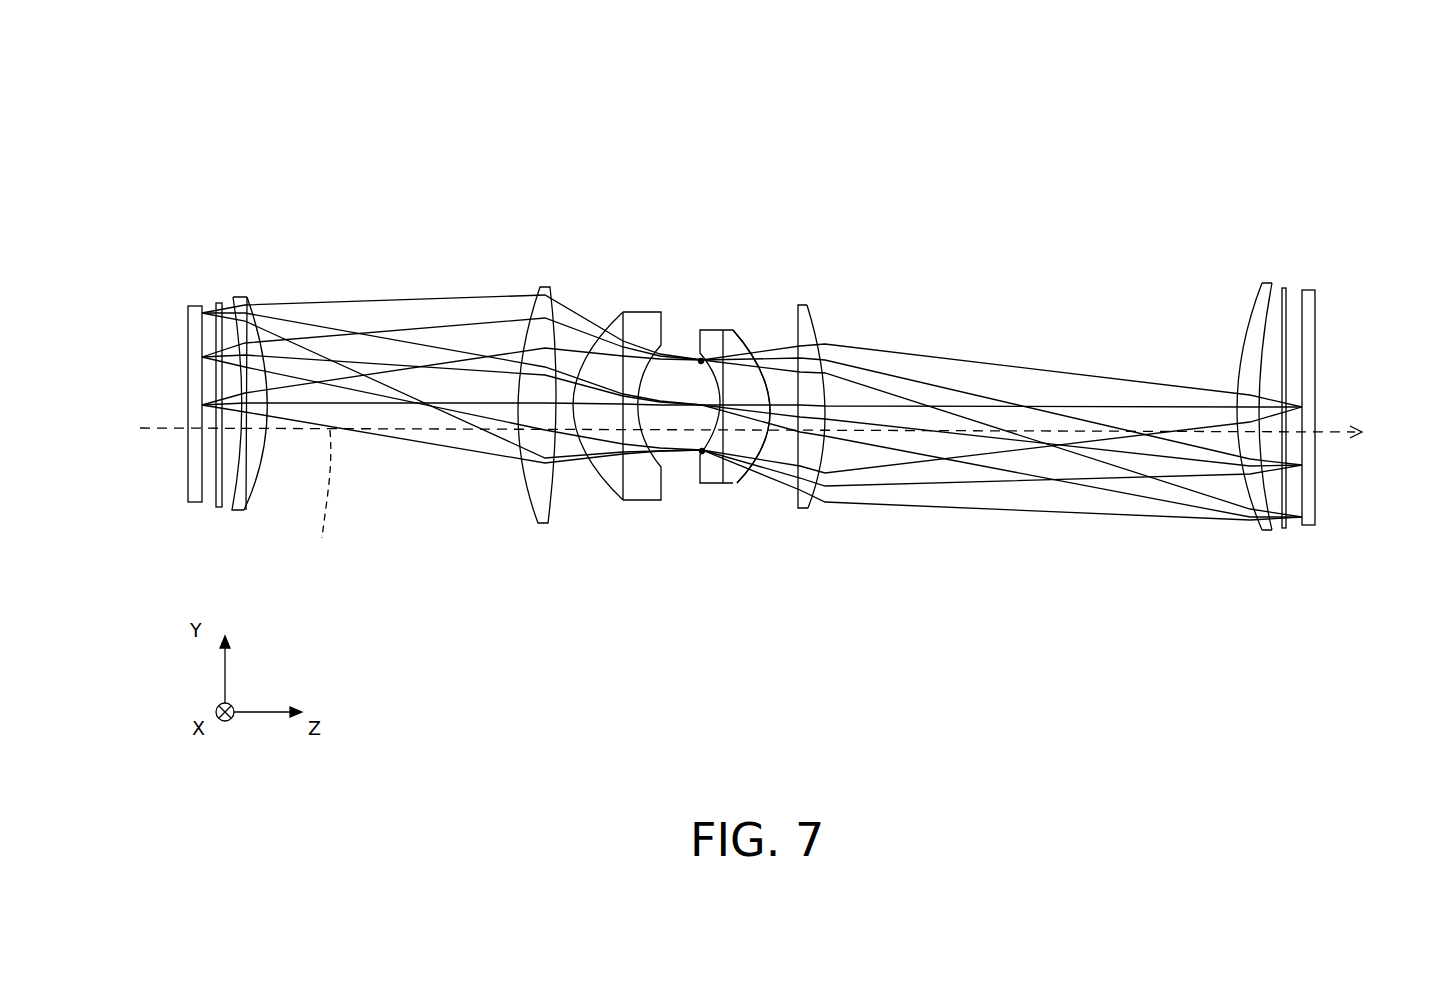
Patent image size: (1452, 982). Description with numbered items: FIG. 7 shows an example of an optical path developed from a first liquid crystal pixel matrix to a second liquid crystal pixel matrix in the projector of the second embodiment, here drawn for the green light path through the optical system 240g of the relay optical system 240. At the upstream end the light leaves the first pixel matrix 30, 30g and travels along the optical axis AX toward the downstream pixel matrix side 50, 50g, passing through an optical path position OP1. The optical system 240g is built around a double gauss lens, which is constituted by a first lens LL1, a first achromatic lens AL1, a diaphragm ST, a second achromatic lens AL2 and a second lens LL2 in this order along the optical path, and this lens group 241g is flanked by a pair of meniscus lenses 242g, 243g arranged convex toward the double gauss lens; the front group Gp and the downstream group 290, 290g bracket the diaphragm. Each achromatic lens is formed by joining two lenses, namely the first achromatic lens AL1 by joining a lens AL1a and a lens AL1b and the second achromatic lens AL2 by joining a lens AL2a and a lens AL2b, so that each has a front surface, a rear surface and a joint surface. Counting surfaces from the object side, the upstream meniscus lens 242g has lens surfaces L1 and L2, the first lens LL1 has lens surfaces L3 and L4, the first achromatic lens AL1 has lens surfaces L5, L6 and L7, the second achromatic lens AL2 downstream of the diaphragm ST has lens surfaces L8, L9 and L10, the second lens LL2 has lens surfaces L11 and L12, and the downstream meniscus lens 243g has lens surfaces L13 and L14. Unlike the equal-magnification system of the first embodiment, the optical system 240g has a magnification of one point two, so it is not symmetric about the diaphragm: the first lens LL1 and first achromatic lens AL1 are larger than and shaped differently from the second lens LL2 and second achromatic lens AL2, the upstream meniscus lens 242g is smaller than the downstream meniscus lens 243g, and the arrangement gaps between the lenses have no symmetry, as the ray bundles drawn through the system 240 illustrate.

The light valve / liquid crystal panel 30 is at (180, 250).
The light valve (green) 30g is at (170, 332).
The relay optical system 240 is at (650, 133).
The optical system 240g is at (773, 314).
The second lens group 241g is at (737, 215).
The meniscus lens 242g is at (390, 364).
The meniscus lens 243g is at (1257, 347).
The lens holding mechanism 290 is at (810, 132).
The lens holding mechanism (green) 290g is at (846, 287).
The cross dichroic prism / screen side element 50 is at (1327, 255).
The prism (green) 50g is at (1375, 324).
The lens surface L1 is at (233, 297).
The lens surface L2 is at (231, 317).
The lens surface L3 is at (516, 293).
The lens surface L4 is at (580, 312).
The lens surface L5 is at (613, 313).
The lens surface L6 is at (639, 318).
The lens surface L7 is at (663, 342).
The lens surface L8 is at (700, 336).
The lens surface L9 is at (722, 331).
The lens surface L10 is at (745, 332).
The lens surface L11 is at (796, 352).
The lens surface L12 is at (828, 360).
The lens surface L13 is at (1240, 360).
The lens surface L14 is at (1269, 342).
The front lens group Gp is at (390, 371).
The first lens LL1 is at (518, 373).
The second lens LL2 is at (814, 380).
The first achromatic lens AL1 is at (622, 389).
The lens AL1a is at (589, 370).
The lens AL1b is at (643, 375).
The second achromatic lens AL2 is at (742, 396).
The lens AL2a is at (772, 382).
The lens AL2b is at (708, 405).
The diaphragm ST is at (702, 359).
The optical axis AX is at (393, 407).
The optical path position OP1 is at (313, 500).